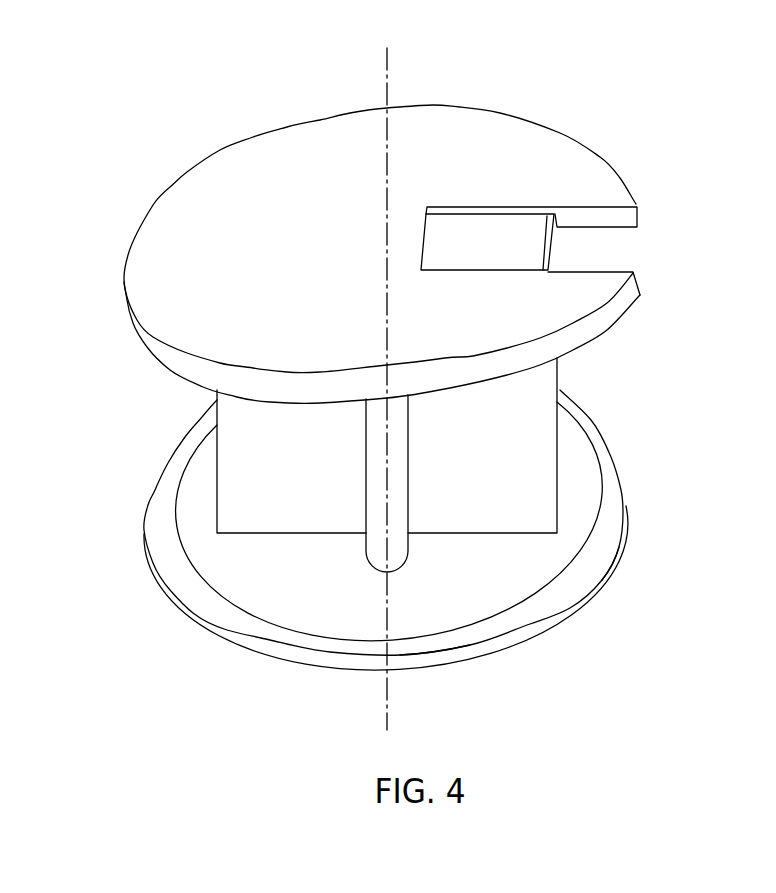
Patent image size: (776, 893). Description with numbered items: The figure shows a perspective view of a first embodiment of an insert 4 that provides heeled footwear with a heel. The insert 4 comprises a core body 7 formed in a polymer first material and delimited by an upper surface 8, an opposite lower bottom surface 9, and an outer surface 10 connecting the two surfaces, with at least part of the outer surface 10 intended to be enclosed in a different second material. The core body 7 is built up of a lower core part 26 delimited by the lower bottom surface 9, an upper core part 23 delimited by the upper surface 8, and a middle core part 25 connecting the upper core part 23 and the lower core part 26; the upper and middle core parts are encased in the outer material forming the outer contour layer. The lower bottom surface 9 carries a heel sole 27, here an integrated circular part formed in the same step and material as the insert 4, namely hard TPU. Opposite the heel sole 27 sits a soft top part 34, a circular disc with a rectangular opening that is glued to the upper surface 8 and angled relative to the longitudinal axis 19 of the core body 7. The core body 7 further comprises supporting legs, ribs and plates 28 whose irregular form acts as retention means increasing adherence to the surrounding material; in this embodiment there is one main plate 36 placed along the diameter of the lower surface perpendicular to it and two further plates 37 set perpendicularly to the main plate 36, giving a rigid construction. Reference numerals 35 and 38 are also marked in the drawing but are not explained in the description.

The insert 4 is at (691, 215).
The core body 7 is at (290, 437).
The upper surface 8 is at (528, 214).
The lower bottom surface 9 is at (600, 565).
The outer surface 10 is at (540, 430).
The longitudinal axis 19 is at (387, 63).
The upper core part 23 is at (553, 240).
The middle core part 25 is at (225, 472).
The lower core part 26 is at (540, 505).
The heel sole 27 is at (580, 608).
The supporting legs, ribs and plates 28 is at (377, 485).
The top part 34 is at (533, 118).
The notch floor 35 is at (613, 263).
The main plate 36 is at (377, 558).
The further plates 37 is at (483, 227).
The base flange 38 is at (520, 650).